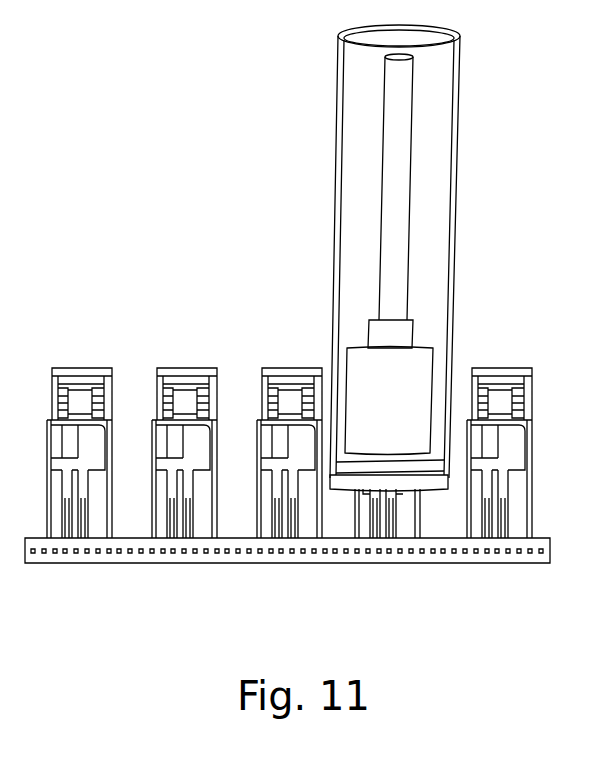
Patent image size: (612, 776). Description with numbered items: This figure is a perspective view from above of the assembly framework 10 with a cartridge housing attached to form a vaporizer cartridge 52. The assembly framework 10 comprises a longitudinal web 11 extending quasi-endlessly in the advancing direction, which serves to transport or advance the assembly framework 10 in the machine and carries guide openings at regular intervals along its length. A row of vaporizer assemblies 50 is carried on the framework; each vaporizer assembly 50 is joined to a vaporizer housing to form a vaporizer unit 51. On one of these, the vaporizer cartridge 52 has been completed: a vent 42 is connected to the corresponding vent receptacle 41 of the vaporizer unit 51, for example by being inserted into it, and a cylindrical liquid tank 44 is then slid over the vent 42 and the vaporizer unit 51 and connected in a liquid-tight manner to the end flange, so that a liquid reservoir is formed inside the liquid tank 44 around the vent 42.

The assembly framework 10 is at (232, 567).
The longitudinal web 11 is at (338, 565).
The vent receptacle 41 is at (400, 336).
The vent 42 is at (410, 205).
The liquid tank 44 is at (459, 116).
The vaporizer assembly 50 is at (84, 358).
The vaporizer unit 51 is at (349, 368).
The vaporizer cartridge 52 is at (330, 230).